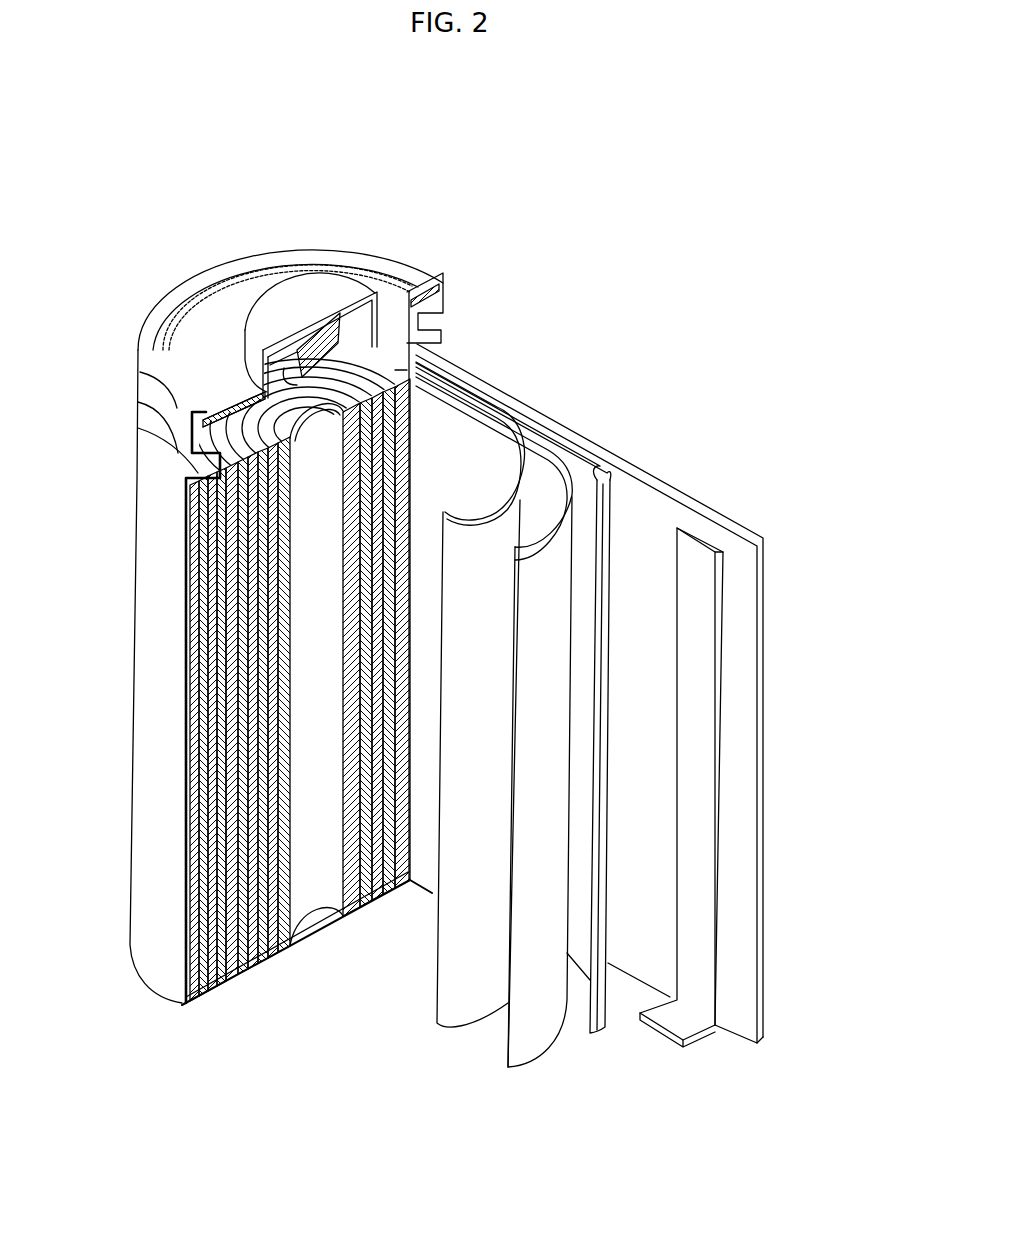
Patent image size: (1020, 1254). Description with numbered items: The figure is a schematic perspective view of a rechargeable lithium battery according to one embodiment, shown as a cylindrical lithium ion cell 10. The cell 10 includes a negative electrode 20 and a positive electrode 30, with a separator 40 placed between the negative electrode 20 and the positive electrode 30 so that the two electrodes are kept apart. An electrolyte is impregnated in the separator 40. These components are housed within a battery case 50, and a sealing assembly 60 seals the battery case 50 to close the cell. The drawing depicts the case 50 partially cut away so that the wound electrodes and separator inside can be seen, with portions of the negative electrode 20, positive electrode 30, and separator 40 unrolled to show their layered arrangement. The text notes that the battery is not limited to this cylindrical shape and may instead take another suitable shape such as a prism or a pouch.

The cylindrical lithium ion cell 10 is at (470, 217).
The negative electrode 20 is at (755, 752).
The positive electrode 30 is at (548, 458).
The separator 40 is at (497, 420).
The battery case 50 is at (140, 683).
The sealing assembly 60 is at (303, 270).